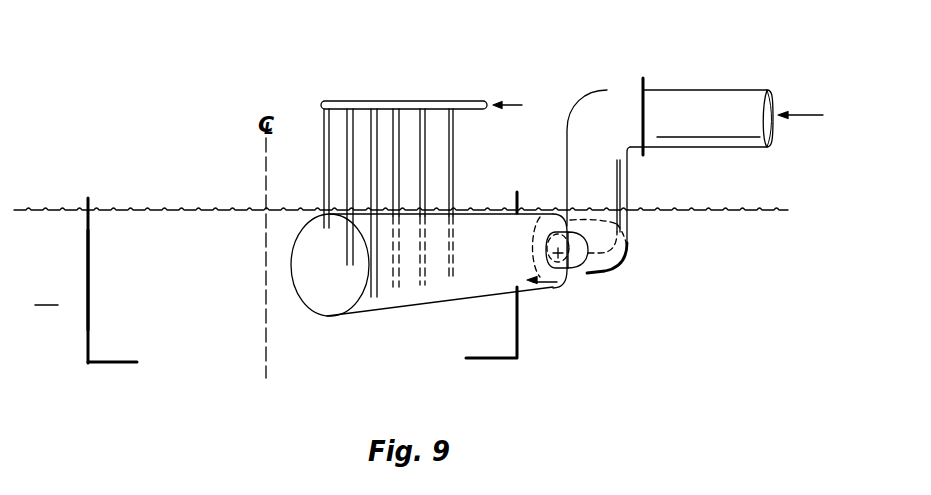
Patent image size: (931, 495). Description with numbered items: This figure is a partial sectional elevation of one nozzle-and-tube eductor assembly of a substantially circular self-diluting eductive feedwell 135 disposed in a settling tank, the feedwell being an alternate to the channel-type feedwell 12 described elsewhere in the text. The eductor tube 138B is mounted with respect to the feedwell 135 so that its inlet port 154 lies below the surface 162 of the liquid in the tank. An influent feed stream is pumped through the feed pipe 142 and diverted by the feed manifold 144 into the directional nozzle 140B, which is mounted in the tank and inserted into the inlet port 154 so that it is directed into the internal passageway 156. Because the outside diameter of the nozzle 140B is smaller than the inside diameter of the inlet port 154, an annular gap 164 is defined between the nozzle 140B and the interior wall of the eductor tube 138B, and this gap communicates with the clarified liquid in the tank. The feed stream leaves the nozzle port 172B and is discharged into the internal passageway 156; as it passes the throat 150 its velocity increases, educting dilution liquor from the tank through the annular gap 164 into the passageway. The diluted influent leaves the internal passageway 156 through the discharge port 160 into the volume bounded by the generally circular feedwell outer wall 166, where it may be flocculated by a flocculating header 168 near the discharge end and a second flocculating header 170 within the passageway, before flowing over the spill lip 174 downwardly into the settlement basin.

The pool 12 is at (110, 258).
The self-diluting eductive feedwell 135 is at (88, 198).
The feedwell outer wall 166 is at (88, 292).
The spill lip 174 is at (120, 362).
The surface of the liquid 162 is at (740, 210).
The flocculating header 168 is at (385, 101).
The second flocculating header 170 is at (388, 203).
The eductor tube 138B is at (460, 297).
The discharge port 160 is at (347, 288).
The throat 150 is at (506, 212).
The internal passageway 156 is at (562, 289).
The inlet port 154 is at (568, 289).
The directional nozzle 140B is at (587, 273).
The feed pipe 142 is at (720, 90).
The feed manifold 144 is at (628, 187).
The annular gap 164 is at (627, 240).
The nozzle port 172B is at (627, 262).